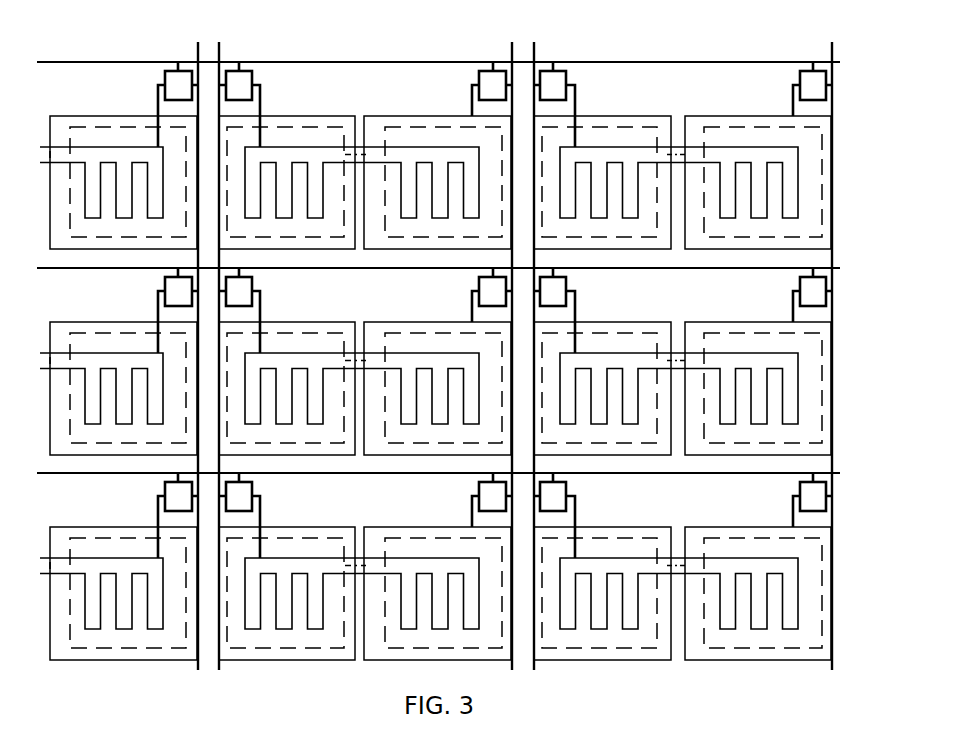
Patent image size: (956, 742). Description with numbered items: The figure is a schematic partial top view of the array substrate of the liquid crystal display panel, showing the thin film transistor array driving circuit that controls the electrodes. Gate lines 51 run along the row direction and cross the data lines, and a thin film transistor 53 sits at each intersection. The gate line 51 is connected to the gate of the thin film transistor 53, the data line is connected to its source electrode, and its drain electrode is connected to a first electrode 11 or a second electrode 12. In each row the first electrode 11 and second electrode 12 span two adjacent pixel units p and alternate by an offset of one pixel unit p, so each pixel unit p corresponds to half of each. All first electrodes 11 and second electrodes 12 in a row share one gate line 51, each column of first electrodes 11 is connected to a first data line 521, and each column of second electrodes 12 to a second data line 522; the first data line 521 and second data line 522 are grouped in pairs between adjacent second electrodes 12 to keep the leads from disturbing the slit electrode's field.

The gate line 51 is at (425, 62).
The first data line 521 is at (196, 50).
The second data line 522 is at (221, 51).
The thin film transistor 53 is at (174, 92).
The pixel unit p is at (418, 127).
The first electrode 11 is at (587, 113).
The second electrode 12 is at (748, 146).